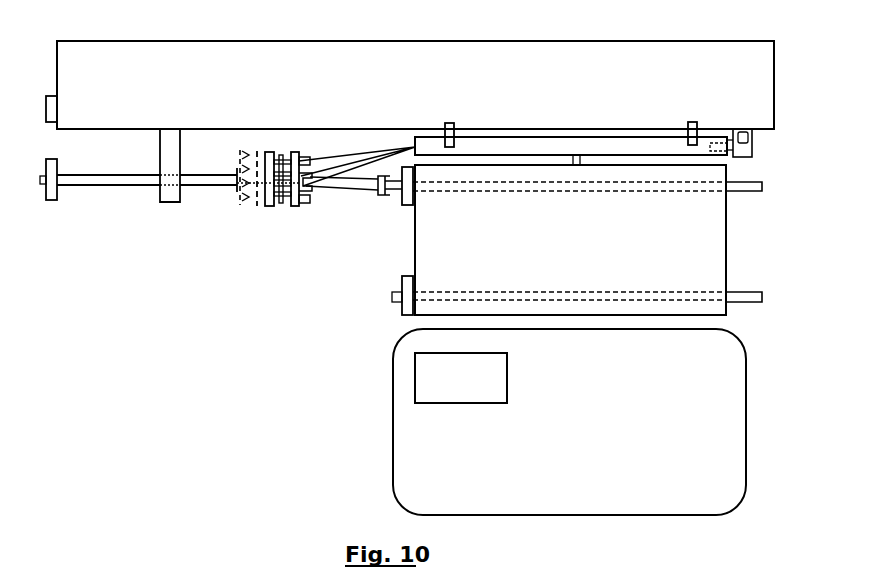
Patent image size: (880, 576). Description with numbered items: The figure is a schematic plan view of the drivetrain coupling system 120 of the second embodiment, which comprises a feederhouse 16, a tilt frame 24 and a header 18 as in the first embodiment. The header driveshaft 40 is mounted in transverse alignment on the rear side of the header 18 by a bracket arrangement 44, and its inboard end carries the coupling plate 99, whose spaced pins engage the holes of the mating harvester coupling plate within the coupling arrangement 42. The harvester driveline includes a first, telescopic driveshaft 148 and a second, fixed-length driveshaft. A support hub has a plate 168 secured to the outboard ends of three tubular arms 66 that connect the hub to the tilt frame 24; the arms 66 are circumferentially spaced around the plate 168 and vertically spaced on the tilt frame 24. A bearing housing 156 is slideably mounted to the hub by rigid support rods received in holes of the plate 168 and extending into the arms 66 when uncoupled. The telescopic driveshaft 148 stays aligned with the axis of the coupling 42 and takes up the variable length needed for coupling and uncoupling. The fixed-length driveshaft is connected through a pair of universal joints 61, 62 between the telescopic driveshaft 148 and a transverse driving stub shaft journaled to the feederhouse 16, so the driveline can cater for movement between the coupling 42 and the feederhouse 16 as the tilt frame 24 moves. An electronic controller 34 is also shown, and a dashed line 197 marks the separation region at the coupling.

The crop gathering header 18 is at (172, 50).
The tilt frame 24 is at (618, 150).
The header driveshaft 40 is at (119, 186).
The bracket arrangement 44 is at (170, 203).
The coupling plate 99 is at (238, 152).
The dashed separation plane 197 is at (258, 208).
The coupling arrangement 42 is at (248, 215).
The drivetrain coupling system 120 is at (247, 238).
The bearing housing 156 is at (270, 208).
The telescopic driveshaft 148 is at (294, 208).
The plate 168 is at (296, 208).
The universal joint 62 is at (312, 193).
The tubular arms 66 is at (346, 166).
The universal joint 61 is at (385, 197).
The feederhouse 16 is at (727, 245).
The electronic controller 34 is at (415, 393).